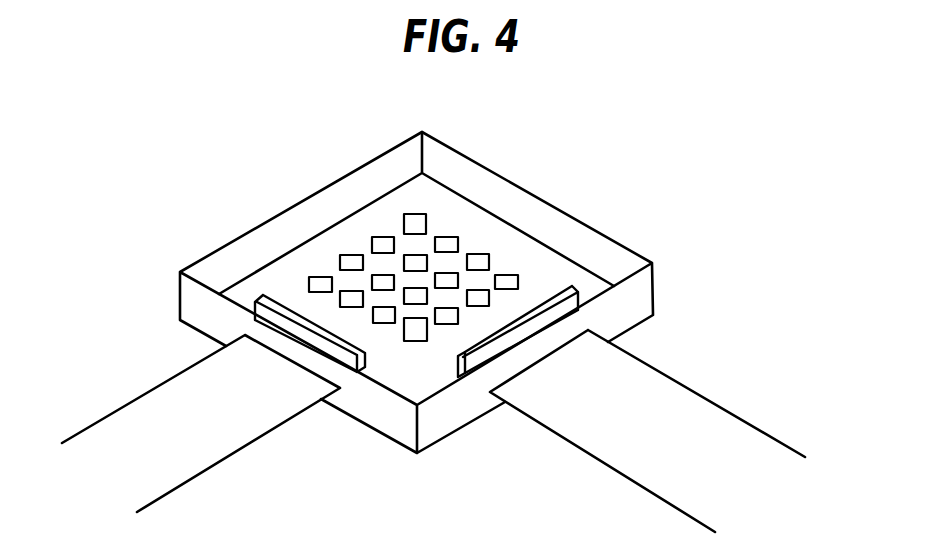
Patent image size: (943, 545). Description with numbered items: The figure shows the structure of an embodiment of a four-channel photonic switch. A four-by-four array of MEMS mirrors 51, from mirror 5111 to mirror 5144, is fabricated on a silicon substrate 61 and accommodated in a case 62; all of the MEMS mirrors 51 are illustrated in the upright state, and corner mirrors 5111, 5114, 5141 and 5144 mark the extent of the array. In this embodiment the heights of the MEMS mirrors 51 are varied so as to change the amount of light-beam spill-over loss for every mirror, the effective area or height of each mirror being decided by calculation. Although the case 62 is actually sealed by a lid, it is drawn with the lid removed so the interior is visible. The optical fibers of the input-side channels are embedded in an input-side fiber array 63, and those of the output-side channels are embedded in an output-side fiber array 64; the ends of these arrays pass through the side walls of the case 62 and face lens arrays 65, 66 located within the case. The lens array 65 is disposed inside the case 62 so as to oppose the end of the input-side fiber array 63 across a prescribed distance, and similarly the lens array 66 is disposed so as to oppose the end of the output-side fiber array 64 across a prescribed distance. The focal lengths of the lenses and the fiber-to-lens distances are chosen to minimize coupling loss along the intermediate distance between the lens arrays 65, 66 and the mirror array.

The MEMS mirrors 51 is at (464, 300).
The MEMS mirror 51_11 5111 is at (413, 214).
The MEMS mirror 51_14 5114 is at (322, 277).
The MEMS mirror 51_41 5141 is at (512, 281).
The MEMS mirror 51_44 5144 is at (418, 341).
The silicon substrate 61 is at (412, 377).
The case 62 is at (560, 210).
The input-side fiber array 63 is at (213, 458).
The output-side fiber array 64 is at (706, 400).
The lens array (input side) 65 is at (348, 358).
The lens array (output side) 66 is at (568, 304).